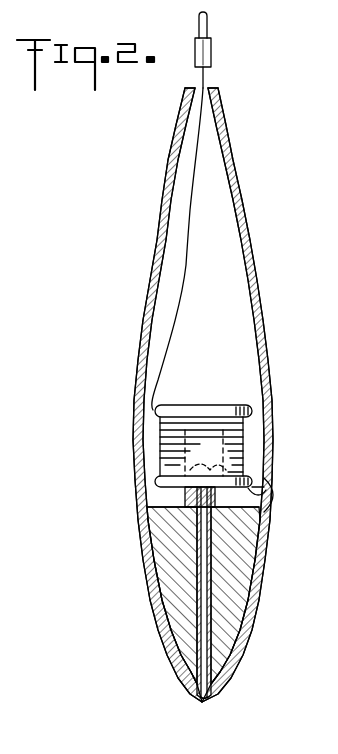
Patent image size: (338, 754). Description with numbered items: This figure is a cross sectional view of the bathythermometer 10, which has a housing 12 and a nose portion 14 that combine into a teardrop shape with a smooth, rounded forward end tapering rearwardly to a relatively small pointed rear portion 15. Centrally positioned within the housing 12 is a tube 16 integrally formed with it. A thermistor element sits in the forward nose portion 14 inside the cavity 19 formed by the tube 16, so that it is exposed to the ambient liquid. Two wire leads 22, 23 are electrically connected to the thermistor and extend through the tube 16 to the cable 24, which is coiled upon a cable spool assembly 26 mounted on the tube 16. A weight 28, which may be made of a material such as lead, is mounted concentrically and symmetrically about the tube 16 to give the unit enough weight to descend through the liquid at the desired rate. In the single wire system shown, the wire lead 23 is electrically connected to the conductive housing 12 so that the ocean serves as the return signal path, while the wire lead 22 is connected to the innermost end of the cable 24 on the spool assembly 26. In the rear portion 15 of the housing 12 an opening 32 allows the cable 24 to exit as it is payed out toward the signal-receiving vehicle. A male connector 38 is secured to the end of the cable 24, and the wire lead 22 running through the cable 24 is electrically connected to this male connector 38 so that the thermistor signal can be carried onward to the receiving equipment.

The bathythermometer 10 is at (176, 676).
The housing 12 is at (138, 380).
The nose portion 14 is at (172, 655).
The rear portion 15 is at (240, 178).
The tube 16 is at (196, 577).
The cavity 19 is at (207, 680).
The wire lead 22 is at (185, 490).
The wire lead 23 is at (262, 488).
The cable 24 is at (187, 263).
The cable spool assembly 26 is at (178, 407).
The weight 28 is at (240, 553).
The opening 32 is at (206, 88).
The male connector 38 is at (212, 52).